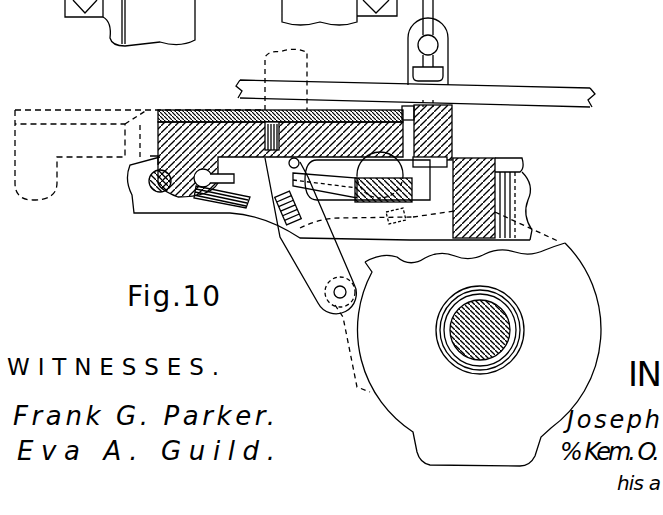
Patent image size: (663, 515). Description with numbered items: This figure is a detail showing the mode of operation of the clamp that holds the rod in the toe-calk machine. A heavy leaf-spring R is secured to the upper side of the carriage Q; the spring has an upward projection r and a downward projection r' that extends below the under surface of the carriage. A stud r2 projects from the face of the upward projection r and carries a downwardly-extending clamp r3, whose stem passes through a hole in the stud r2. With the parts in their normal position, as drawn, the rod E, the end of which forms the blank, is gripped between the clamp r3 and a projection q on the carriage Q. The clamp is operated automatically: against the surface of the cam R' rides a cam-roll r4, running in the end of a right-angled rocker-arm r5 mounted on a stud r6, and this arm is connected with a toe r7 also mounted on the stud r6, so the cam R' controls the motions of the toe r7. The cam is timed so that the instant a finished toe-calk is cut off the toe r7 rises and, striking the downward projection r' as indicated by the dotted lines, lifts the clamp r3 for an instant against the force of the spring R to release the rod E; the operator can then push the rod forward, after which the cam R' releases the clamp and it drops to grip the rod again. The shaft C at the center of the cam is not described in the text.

The leaf-spring R is at (276, 122).
The cam R' is at (478, 354).
The projection q is at (450, 113).
The carriage Q is at (157, 158).
The rod E is at (548, 95).
The shaft C is at (512, 325).
The upward projection r is at (448, 62).
The stud r2 is at (433, 43).
The clamp r3 is at (440, 73).
The cam-roll r4 is at (339, 299).
The rocker-arm r5 is at (300, 266).
The stud r6 is at (359, 177).
The toe r7 is at (266, 164).
The downward projection r' is at (430, 200).